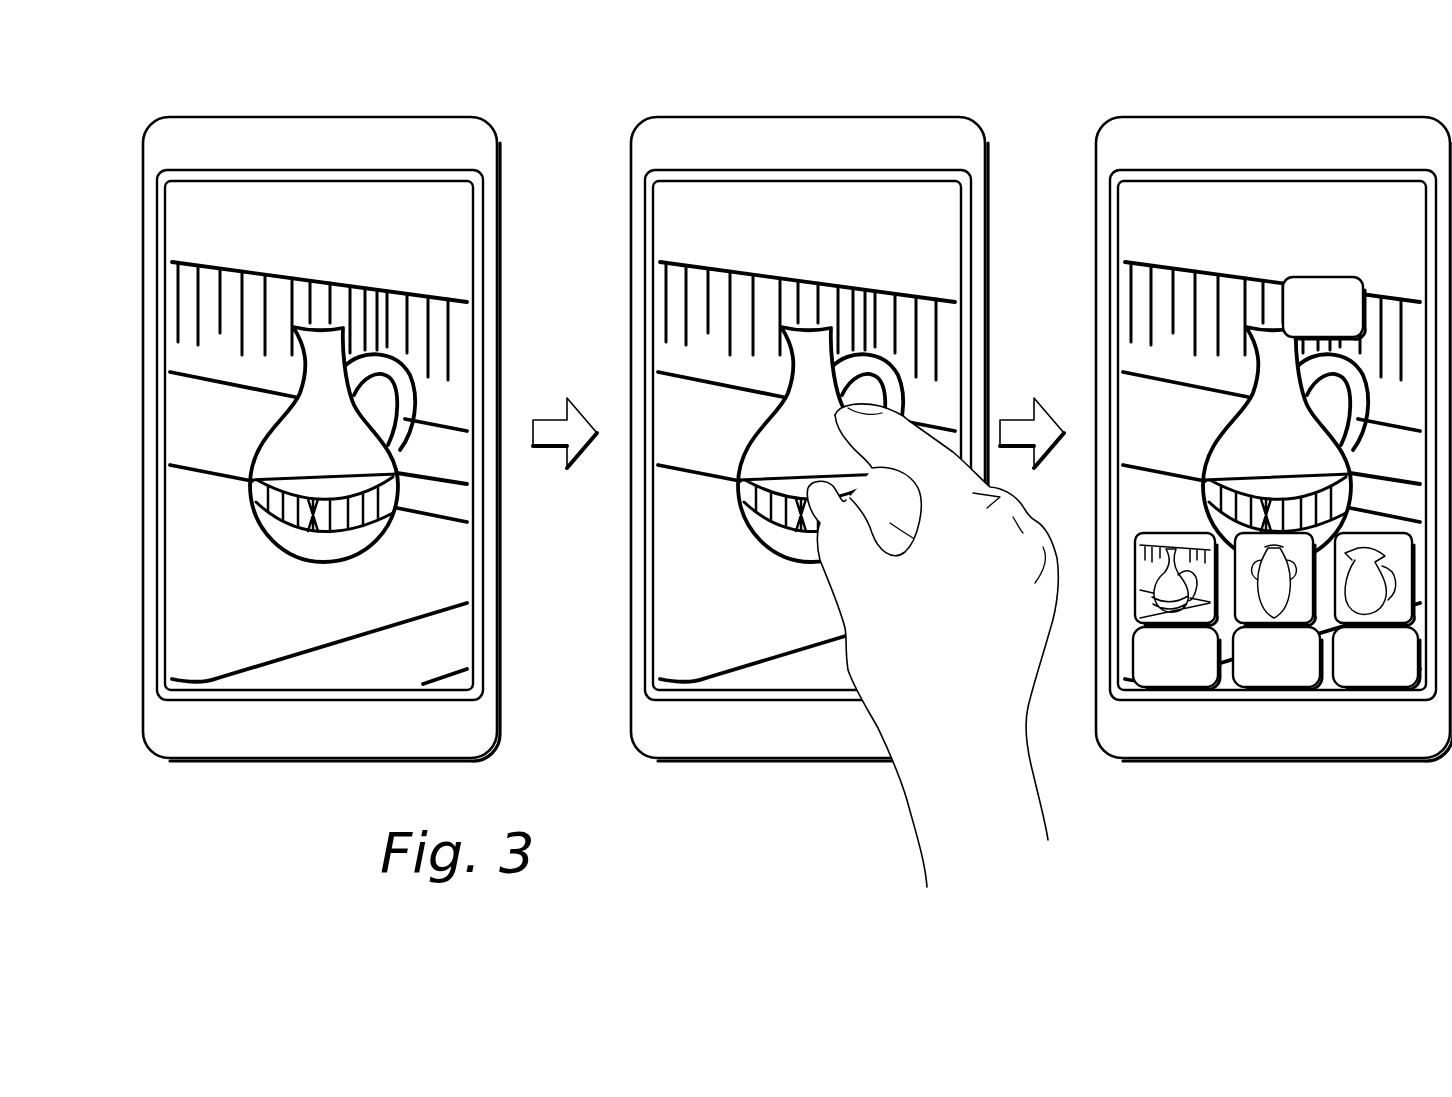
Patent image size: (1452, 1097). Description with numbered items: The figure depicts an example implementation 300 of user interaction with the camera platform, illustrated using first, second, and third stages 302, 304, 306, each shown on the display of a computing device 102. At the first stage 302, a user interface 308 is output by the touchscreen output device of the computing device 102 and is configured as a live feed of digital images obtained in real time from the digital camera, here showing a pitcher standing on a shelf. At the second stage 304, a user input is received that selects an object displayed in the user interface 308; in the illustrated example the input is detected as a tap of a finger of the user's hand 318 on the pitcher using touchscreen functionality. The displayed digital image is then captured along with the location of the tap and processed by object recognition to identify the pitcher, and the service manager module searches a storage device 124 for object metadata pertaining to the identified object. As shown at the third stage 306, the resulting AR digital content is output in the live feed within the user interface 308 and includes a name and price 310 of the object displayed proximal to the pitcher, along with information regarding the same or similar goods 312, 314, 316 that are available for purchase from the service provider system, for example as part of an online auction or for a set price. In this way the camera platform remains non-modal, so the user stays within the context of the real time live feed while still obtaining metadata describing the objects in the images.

The example implementation 300 is at (171, 54).
The first stage 302 is at (325, 374).
The second stage 304 is at (818, 474).
The third stage 306 is at (1250, 406).
The computing device 102 is at (318, 128).
The user interface 308 is at (365, 178).
The storage device 124 is at (470, 270).
The name and price 310 is at (1322, 277).
The same or similar goods 312 is at (1178, 690).
The same or similar goods 314 is at (1278, 690).
The same or similar goods 316 is at (1365, 690).
The user's hand 318 is at (951, 645).